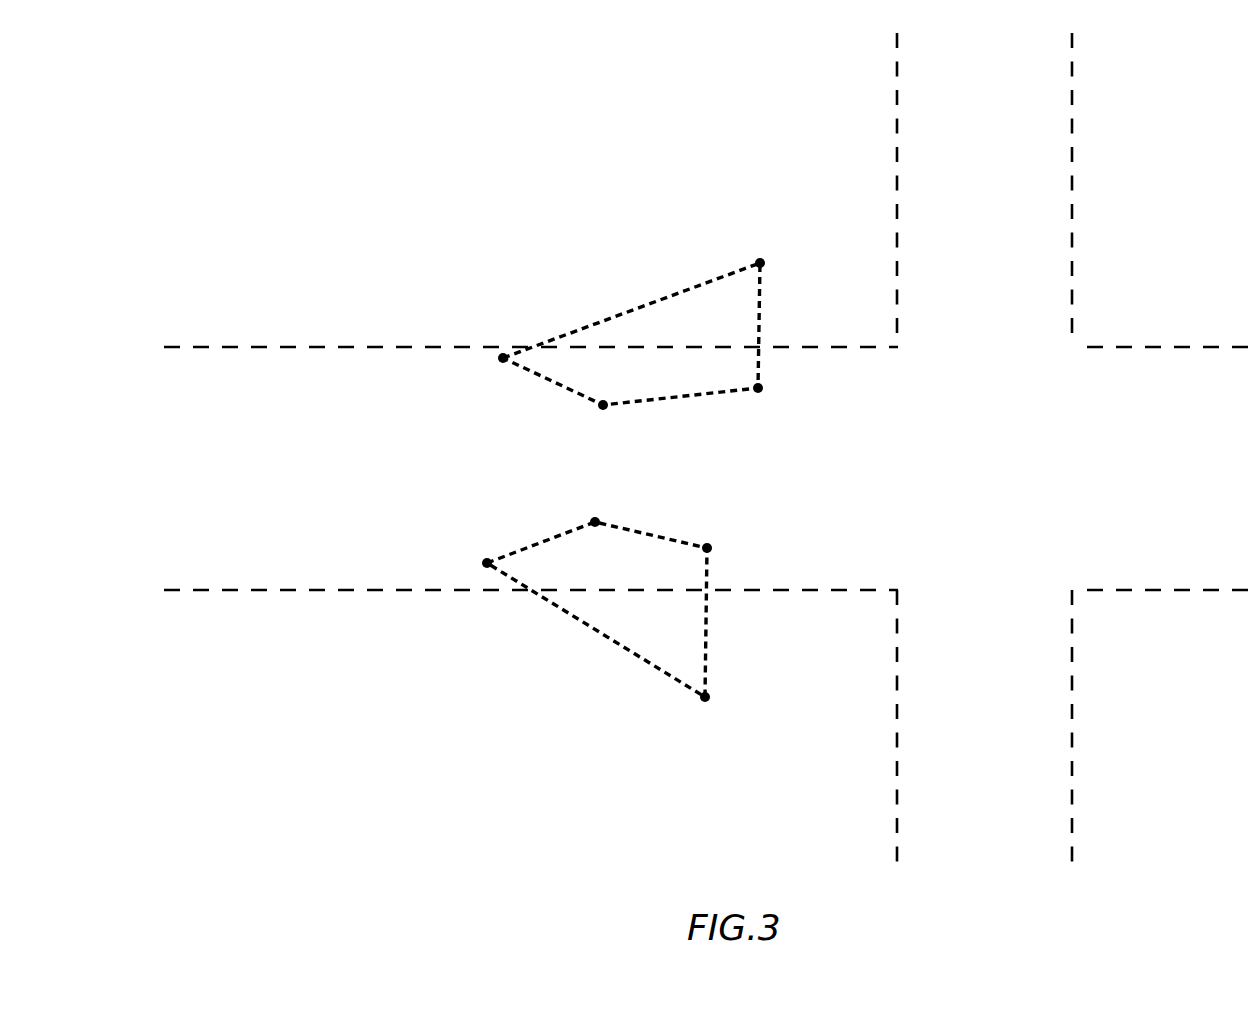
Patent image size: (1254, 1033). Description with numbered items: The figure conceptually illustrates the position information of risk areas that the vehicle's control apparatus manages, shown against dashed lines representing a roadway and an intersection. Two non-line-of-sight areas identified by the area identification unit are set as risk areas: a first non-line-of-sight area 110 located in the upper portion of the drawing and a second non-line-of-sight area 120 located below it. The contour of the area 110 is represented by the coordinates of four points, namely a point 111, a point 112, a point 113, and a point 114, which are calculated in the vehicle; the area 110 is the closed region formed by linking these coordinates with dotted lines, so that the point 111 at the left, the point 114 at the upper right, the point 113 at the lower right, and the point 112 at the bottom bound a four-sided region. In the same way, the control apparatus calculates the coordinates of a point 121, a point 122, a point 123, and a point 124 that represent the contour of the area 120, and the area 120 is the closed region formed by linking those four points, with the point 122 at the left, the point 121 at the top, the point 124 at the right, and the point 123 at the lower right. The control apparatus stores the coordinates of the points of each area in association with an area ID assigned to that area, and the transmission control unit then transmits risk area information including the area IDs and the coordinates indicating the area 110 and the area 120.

The non-line-of-sight area 110 is at (678, 293).
The point 111 is at (503, 360).
The point 112 is at (604, 408).
The point 113 is at (759, 391).
The point 114 is at (761, 261).
The non-line-of-sight area 120 is at (594, 628).
The point 121 is at (595, 520).
The point 122 is at (487, 561).
The point 123 is at (706, 700).
The point 124 is at (708, 547).